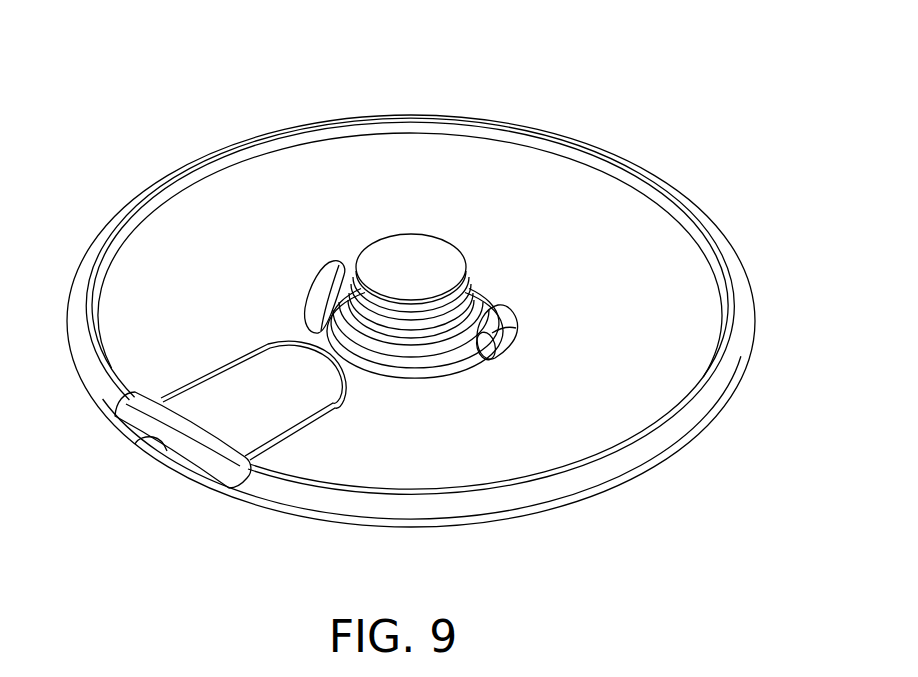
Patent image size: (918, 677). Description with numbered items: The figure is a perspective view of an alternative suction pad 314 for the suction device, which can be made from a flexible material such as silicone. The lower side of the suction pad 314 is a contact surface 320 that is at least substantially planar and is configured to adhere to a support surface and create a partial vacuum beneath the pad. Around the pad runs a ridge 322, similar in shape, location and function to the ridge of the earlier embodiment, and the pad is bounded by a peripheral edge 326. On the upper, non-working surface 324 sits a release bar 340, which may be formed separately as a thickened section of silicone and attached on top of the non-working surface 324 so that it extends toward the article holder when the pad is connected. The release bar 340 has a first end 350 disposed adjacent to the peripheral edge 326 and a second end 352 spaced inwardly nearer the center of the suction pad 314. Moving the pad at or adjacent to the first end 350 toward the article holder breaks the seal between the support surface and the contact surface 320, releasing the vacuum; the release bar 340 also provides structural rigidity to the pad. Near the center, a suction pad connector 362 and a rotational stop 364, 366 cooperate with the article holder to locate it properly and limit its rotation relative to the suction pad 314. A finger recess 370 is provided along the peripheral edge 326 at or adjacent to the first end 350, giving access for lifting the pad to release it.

The contact surface 320 is at (593, 497).
The ridge 322 is at (719, 246).
The non-working surface 324 is at (398, 150).
The suction pad 314 is at (486, 168).
The peripheral edge 326 is at (755, 367).
The second end 352 is at (347, 377).
The suction pad connector 362 is at (450, 257).
The rotational stop 364 is at (356, 272).
The rotational stop 366 is at (504, 347).
The release bar 340 is at (231, 373).
The first end 350 is at (197, 414).
The finger recess 370 is at (146, 445).